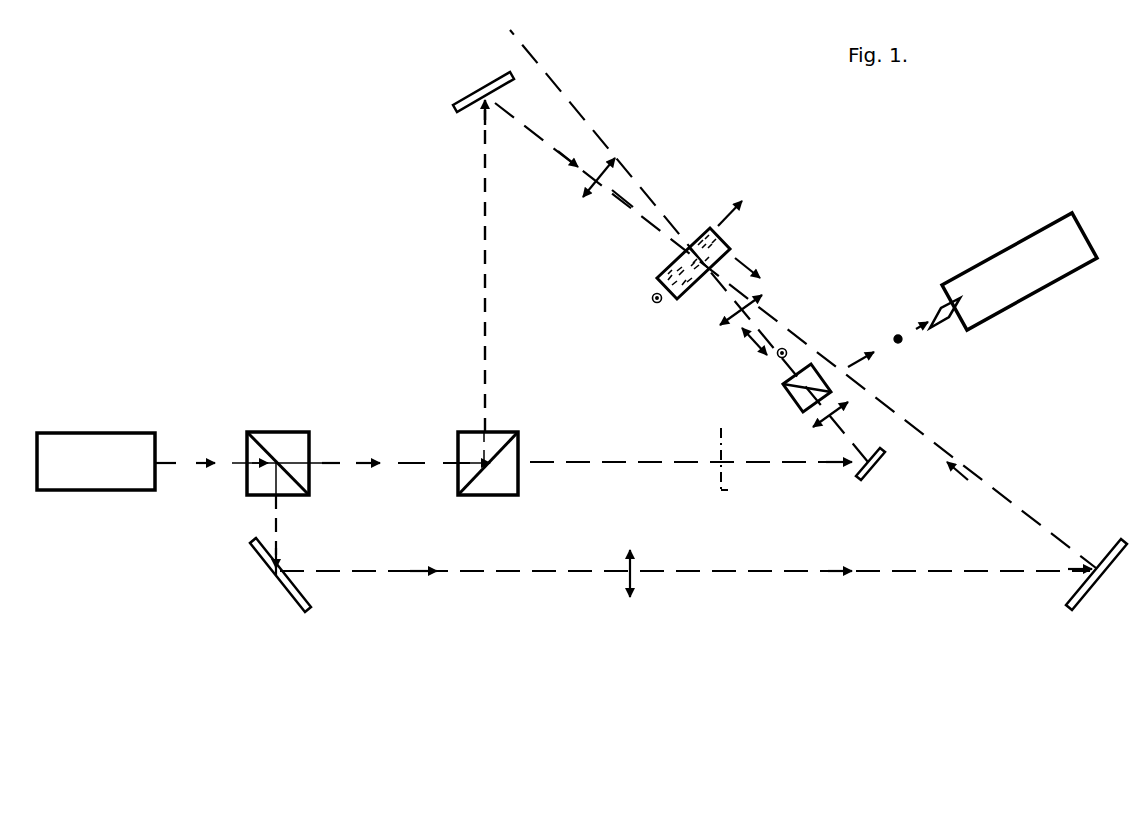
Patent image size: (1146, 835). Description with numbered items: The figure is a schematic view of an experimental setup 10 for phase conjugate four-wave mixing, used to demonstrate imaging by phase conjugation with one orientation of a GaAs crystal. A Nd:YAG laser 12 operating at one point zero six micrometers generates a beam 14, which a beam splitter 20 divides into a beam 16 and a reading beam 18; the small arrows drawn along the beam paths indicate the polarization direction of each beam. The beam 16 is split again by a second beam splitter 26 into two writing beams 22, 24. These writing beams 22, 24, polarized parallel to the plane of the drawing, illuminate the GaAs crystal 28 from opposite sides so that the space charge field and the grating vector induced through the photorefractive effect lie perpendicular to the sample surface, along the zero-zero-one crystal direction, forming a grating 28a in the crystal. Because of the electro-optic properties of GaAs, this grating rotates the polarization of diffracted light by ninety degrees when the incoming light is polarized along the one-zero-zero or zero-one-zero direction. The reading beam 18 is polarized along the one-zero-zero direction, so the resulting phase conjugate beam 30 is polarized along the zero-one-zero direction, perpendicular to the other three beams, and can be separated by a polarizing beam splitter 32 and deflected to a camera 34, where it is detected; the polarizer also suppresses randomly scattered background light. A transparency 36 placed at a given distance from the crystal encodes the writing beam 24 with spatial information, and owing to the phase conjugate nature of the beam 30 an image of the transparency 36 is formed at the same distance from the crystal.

The experimental setup 10 is at (405, 252).
The Nd:YAG laser 12 is at (134, 432).
The beam 14 is at (176, 464).
The beam 16 is at (360, 462).
The reading beam 18 is at (463, 570).
The beam splitter 20 is at (300, 440).
The writing beam 22 is at (487, 291).
The writing beam 24 is at (627, 460).
The beam splitter 26 is at (512, 480).
The GaAs crystal 28 is at (662, 259).
The grating 28a is at (698, 250).
The phase conjugate beam 30 is at (892, 342).
The polarizing beam splitter 32 is at (798, 397).
The camera 34 is at (998, 259).
The transparency 36 is at (728, 485).